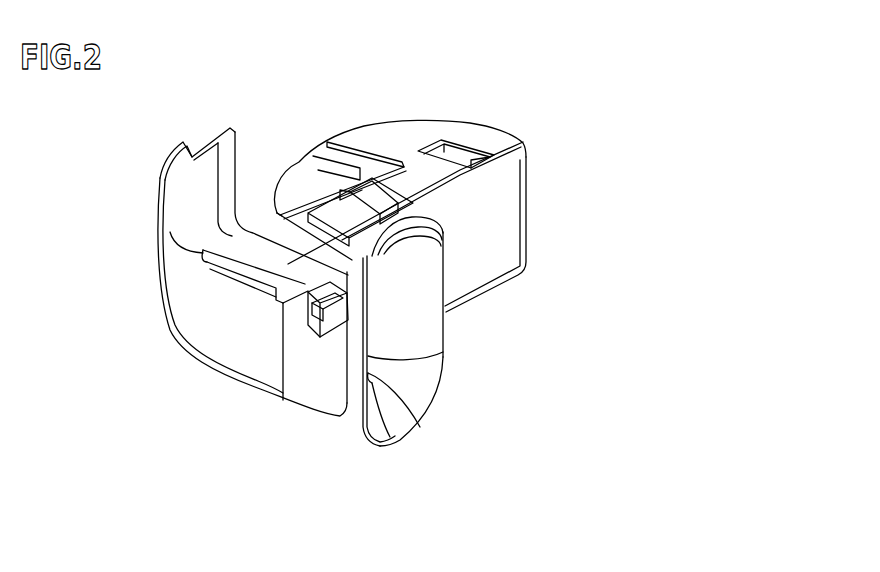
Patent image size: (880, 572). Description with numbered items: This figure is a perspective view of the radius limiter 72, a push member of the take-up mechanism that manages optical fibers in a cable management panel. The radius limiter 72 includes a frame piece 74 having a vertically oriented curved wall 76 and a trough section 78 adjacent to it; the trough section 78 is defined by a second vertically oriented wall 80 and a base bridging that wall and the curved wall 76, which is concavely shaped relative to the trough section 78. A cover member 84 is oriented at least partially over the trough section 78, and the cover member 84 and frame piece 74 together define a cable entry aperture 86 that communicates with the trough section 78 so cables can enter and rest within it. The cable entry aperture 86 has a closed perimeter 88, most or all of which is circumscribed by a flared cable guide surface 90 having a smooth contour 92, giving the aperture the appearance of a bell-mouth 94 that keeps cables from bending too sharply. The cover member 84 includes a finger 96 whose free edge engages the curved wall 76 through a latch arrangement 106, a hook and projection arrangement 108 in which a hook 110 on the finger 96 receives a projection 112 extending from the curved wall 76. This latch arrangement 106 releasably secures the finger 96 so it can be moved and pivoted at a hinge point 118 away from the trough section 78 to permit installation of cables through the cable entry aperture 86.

The radius limiter 72 is at (497, 71).
The frame piece 74 is at (404, 125).
The vertically oriented curved wall 76 is at (162, 175).
The trough section 78 is at (253, 230).
The second vertically oriented wall 80 is at (274, 214).
The cover member 84 is at (250, 263).
The cable entry aperture 86 is at (428, 308).
The closed perimeter 88 is at (378, 443).
The flared cable guide surface 90 is at (418, 402).
The smooth contour 92 is at (399, 428).
The bell-mouth 94 is at (457, 265).
The finger 96 is at (250, 270).
The latch arrangement 106 is at (294, 366).
The hook and projection arrangement 108 is at (282, 319).
The hook 110 is at (332, 330).
The projection 112 is at (335, 313).
The hinge point 118 is at (399, 183).